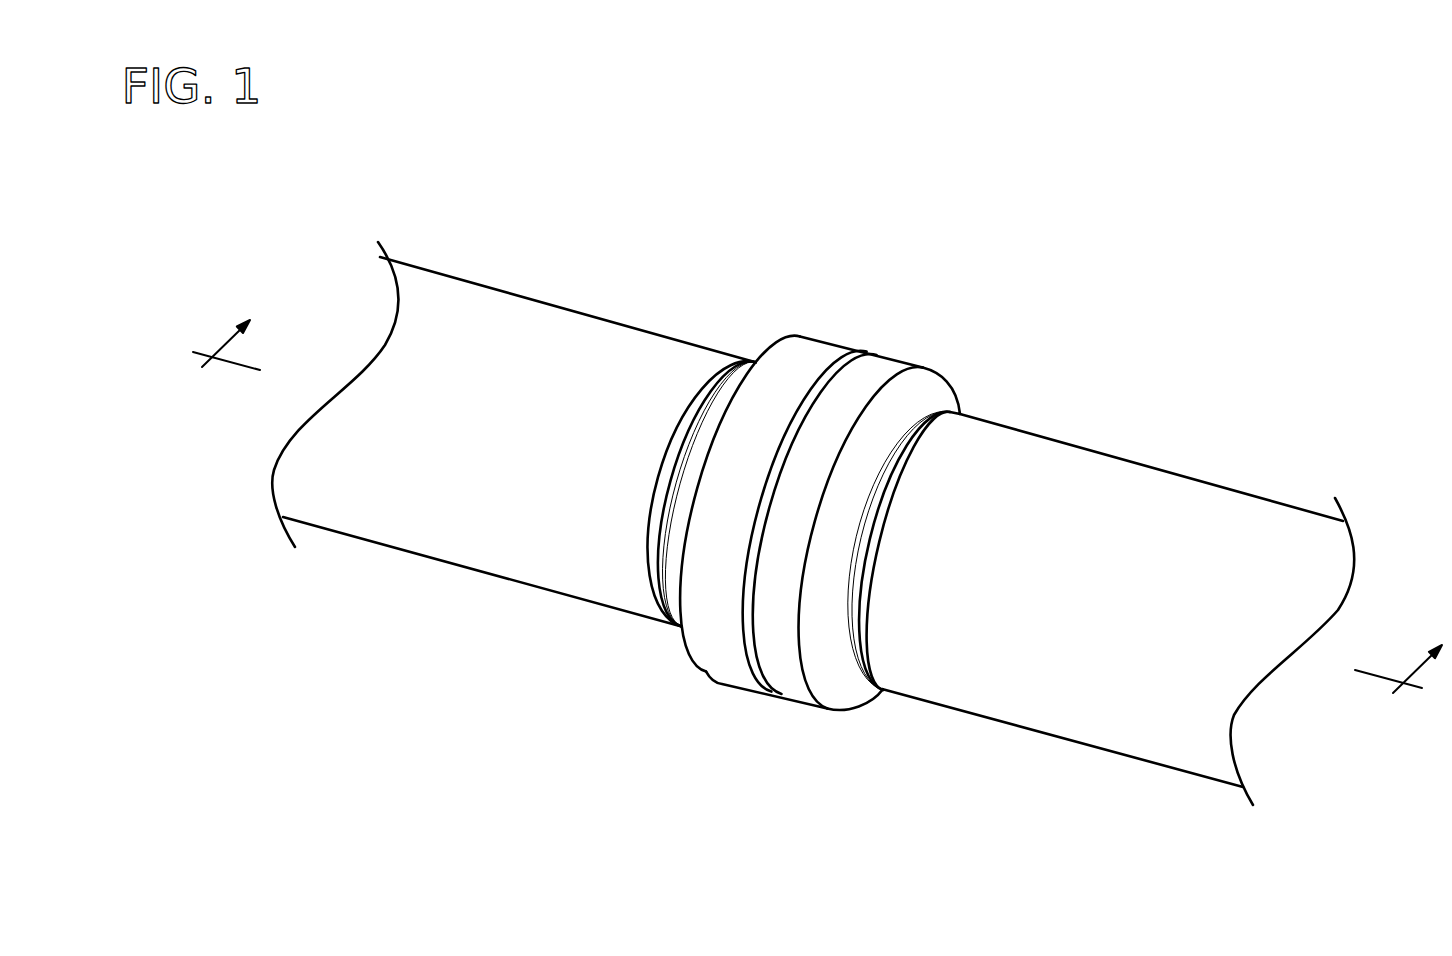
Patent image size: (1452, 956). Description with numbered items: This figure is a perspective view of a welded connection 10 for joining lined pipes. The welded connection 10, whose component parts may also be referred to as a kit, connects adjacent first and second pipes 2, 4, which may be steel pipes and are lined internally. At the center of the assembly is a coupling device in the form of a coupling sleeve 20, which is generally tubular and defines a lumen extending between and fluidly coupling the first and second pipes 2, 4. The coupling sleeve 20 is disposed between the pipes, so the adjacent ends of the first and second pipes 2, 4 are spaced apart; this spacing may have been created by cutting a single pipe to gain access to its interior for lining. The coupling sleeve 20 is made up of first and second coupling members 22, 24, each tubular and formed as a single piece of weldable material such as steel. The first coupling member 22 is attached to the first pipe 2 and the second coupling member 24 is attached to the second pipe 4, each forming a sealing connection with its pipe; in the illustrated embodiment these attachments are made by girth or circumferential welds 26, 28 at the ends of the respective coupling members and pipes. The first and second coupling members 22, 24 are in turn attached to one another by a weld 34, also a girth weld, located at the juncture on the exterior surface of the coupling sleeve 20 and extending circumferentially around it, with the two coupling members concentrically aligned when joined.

The first pipe 2 is at (535, 337).
The second pipe 4 is at (1165, 498).
The welded connection 10 is at (966, 217).
The coupling sleeve 20 is at (816, 312).
The first coupling member 22 is at (798, 362).
The second coupling member 24 is at (893, 368).
The weld 26 is at (690, 412).
The weld 28 is at (922, 440).
The weld 34 is at (848, 357).